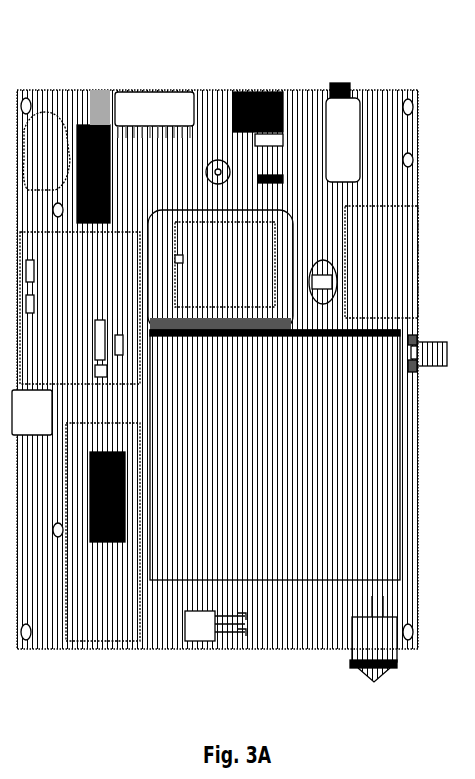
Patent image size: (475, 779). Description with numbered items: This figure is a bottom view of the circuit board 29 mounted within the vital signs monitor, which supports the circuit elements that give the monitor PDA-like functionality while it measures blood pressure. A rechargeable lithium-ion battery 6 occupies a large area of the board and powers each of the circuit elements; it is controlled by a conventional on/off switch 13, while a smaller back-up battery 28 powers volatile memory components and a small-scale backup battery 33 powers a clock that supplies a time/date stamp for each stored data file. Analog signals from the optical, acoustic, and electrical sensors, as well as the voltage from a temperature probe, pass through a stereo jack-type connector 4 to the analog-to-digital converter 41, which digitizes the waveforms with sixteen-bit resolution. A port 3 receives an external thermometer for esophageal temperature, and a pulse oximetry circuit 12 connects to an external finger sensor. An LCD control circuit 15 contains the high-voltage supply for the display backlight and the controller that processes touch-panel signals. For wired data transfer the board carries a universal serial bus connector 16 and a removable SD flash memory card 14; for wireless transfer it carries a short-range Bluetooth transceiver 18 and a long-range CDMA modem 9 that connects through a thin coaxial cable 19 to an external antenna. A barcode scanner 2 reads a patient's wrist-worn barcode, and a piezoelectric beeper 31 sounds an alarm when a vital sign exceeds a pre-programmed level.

The barcode scanner 2 is at (254, 95).
The port 3 is at (101, 98).
The connector 4 is at (168, 100).
The rechargeable lithium-ion battery 6 is at (329, 401).
The CDMA modem 9 is at (212, 246).
The pulse oximetry circuit 12 is at (133, 266).
The on/off switch 13 is at (356, 670).
The removable SD flash memory card 14 is at (367, 246).
The LCD control circuit 15 is at (111, 625).
The universal serial bus (USB) connector 16 is at (41, 421).
The Bluetooth transceiver 18 is at (340, 85).
The coaxial cable 19 is at (165, 257).
The back-up battery 28 is at (56, 163).
The circuit board 29 is at (72, 96).
The piezoelectric beeper 31 is at (206, 165).
The backup battery 33 is at (328, 262).
The analog-to-digital converter 41 is at (425, 345).